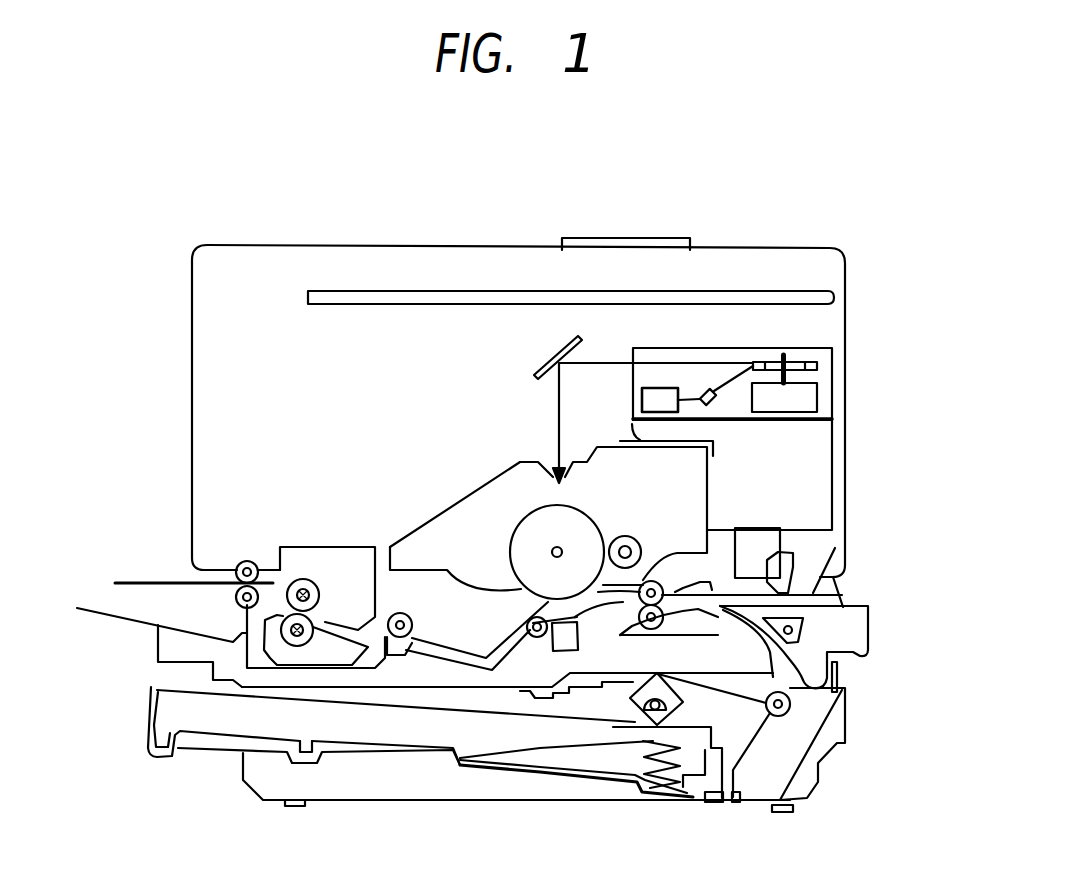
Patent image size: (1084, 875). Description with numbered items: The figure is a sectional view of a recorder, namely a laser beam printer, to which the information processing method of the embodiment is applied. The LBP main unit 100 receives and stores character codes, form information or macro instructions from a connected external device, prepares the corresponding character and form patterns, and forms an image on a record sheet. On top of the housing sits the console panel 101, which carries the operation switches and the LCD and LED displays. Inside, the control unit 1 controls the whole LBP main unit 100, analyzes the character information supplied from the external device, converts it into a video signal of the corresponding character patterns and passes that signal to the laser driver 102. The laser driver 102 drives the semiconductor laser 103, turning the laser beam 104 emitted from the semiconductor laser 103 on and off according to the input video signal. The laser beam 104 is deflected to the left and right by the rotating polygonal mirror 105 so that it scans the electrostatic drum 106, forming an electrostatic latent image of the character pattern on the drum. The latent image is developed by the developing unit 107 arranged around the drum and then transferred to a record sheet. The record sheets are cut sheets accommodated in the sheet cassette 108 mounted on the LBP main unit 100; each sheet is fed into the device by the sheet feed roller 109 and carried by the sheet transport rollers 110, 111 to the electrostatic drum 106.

The control unit 1 is at (832, 292).
The LBP main unit 100 is at (799, 250).
The console panel 101 is at (648, 237).
The laser driver 102 is at (642, 401).
The semiconductor laser 103 is at (713, 405).
The laser beam 104 is at (693, 363).
The rotating polygonal mirror 105 is at (817, 366).
The electrostatic drum 106 is at (527, 517).
The developing unit 107 is at (425, 537).
The sheet cassette 108 is at (148, 727).
The sheet feed roller 109 is at (635, 697).
The sheet transport roller 110 is at (772, 712).
The sheet transport roller 111 is at (637, 633).